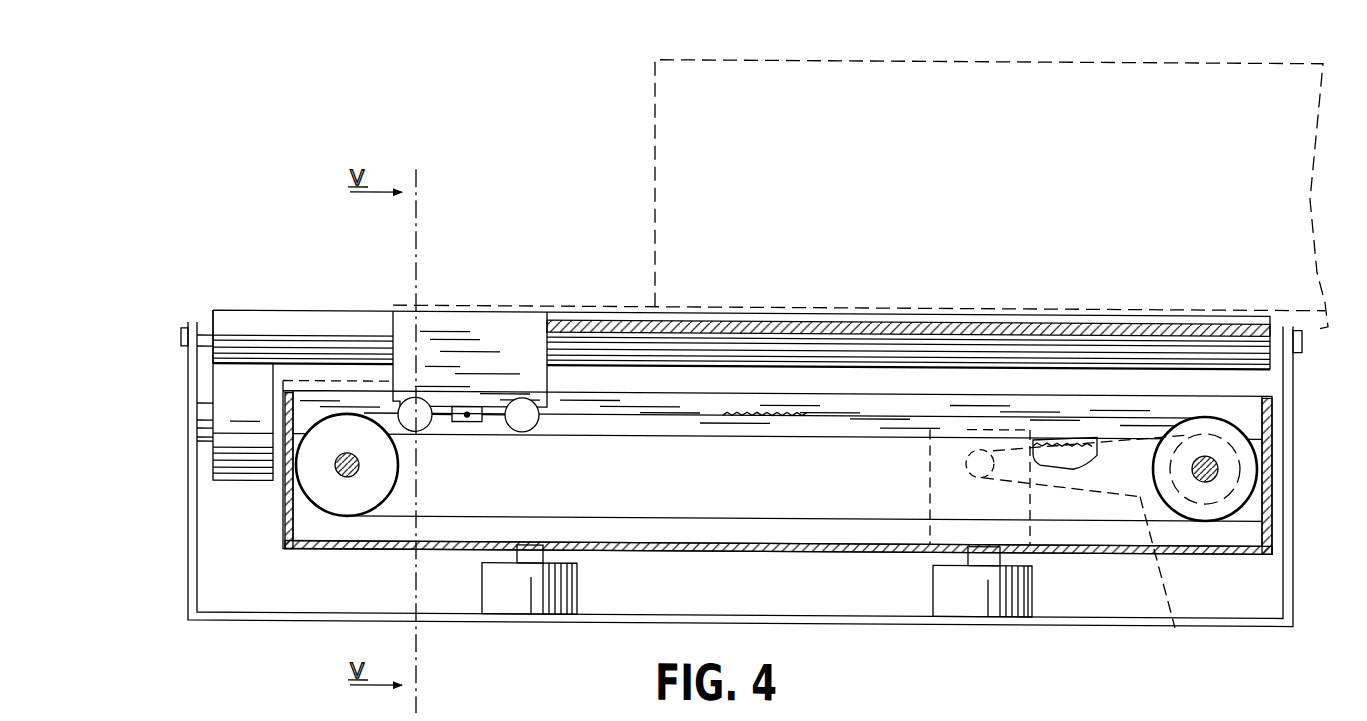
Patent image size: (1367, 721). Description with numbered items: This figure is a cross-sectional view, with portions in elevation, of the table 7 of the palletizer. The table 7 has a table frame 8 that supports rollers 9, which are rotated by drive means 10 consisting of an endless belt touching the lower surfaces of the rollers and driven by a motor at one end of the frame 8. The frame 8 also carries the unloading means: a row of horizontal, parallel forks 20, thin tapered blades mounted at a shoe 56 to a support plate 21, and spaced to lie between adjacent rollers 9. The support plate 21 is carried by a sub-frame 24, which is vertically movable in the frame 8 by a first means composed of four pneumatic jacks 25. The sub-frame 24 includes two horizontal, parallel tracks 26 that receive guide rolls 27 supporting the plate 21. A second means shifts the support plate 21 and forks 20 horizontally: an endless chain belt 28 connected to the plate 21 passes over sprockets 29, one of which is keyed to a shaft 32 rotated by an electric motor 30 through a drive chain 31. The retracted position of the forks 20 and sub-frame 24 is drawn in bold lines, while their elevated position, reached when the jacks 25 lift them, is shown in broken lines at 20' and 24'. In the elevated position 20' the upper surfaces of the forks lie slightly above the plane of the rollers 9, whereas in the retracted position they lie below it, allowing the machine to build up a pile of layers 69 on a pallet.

The table 7 is at (212, 306).
The table frame 8 is at (638, 617).
The rollers 9 is at (268, 323).
The drive means 10 is at (248, 455).
The forks 20 is at (908, 292).
The elevated position of forks 20' is at (626, 279).
The support plate 21 is at (480, 403).
The sub-frame 24 is at (766, 520).
The elevated position of sub-frame 24' is at (338, 314).
The pneumatic jacks 25 is at (537, 591).
The tracks 26 is at (832, 430).
The guide rolls 27 is at (522, 430).
The endless chain belt 28 is at (725, 412).
The sprockets 29 is at (345, 503).
The electric motor 30 is at (1020, 500).
The drive chain 31 is at (1170, 579).
The shaft 32 is at (1218, 460).
The shoe 56 is at (518, 345).
The layers 69 is at (727, 58).